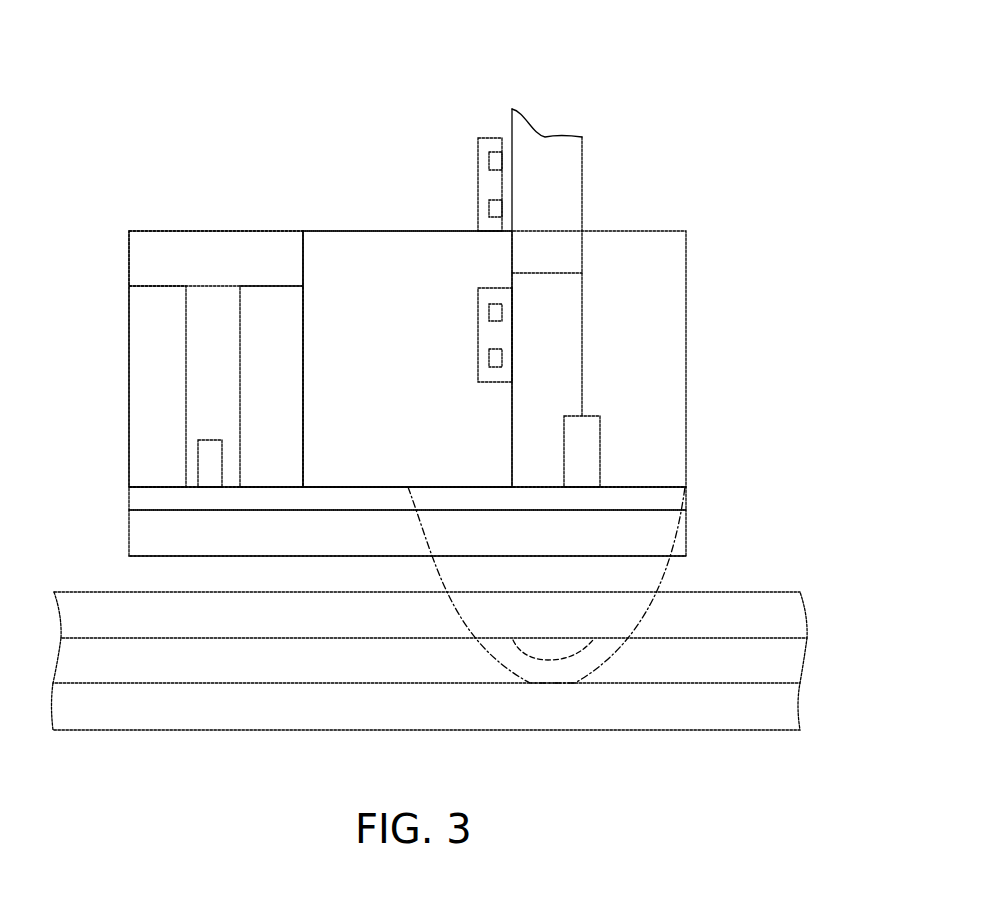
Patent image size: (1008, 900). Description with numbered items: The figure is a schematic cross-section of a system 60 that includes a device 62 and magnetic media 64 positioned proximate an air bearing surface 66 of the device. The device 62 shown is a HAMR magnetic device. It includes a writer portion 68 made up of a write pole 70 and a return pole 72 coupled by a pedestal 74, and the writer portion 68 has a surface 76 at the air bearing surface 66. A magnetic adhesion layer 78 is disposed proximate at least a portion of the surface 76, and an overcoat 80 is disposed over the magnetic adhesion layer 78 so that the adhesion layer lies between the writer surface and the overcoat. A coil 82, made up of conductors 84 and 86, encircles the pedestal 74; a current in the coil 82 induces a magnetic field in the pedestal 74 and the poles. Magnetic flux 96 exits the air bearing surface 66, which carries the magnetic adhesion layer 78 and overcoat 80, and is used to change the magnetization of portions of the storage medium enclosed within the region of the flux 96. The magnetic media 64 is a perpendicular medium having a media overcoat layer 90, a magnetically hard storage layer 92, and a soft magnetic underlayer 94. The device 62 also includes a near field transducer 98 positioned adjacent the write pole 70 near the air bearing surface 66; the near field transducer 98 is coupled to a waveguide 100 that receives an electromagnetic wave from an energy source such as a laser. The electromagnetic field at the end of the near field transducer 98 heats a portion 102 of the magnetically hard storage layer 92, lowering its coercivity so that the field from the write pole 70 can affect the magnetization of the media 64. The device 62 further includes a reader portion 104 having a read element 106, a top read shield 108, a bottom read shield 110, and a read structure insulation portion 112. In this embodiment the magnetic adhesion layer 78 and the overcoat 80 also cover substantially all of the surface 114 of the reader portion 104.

The system 60 is at (760, 174).
The device 62 is at (762, 333).
The magnetic media 64 is at (793, 556).
The air bearing surface 66 is at (683, 576).
The writer portion 68 is at (305, 67).
The write pole 70 is at (686, 272).
The return pole 72 is at (365, 393).
The pedestal 74 is at (582, 247).
The surface 76 is at (650, 490).
The magnetic adhesion layer 78 is at (129, 497).
The overcoat 80 is at (129, 536).
The coil 82 is at (458, 120).
The conductor 84 is at (488, 313).
The conductor 86 is at (488, 161).
The media overcoat layer 90 is at (806, 616).
The magnetically hard storage layer 92 is at (806, 660).
The soft magnetic underlayer 94 is at (800, 707).
The magnetic flux 96 is at (607, 658).
The near field transducer 98 is at (600, 446).
The waveguide 100 is at (582, 161).
The heated portion 102 is at (540, 658).
The reader portion 104 is at (129, 165).
The read element 106 is at (212, 463).
The top read shield 108 is at (136, 351).
The bottom read shield 110 is at (251, 444).
The read structure insulation portion 112 is at (196, 269).
The surface 114 is at (212, 487).